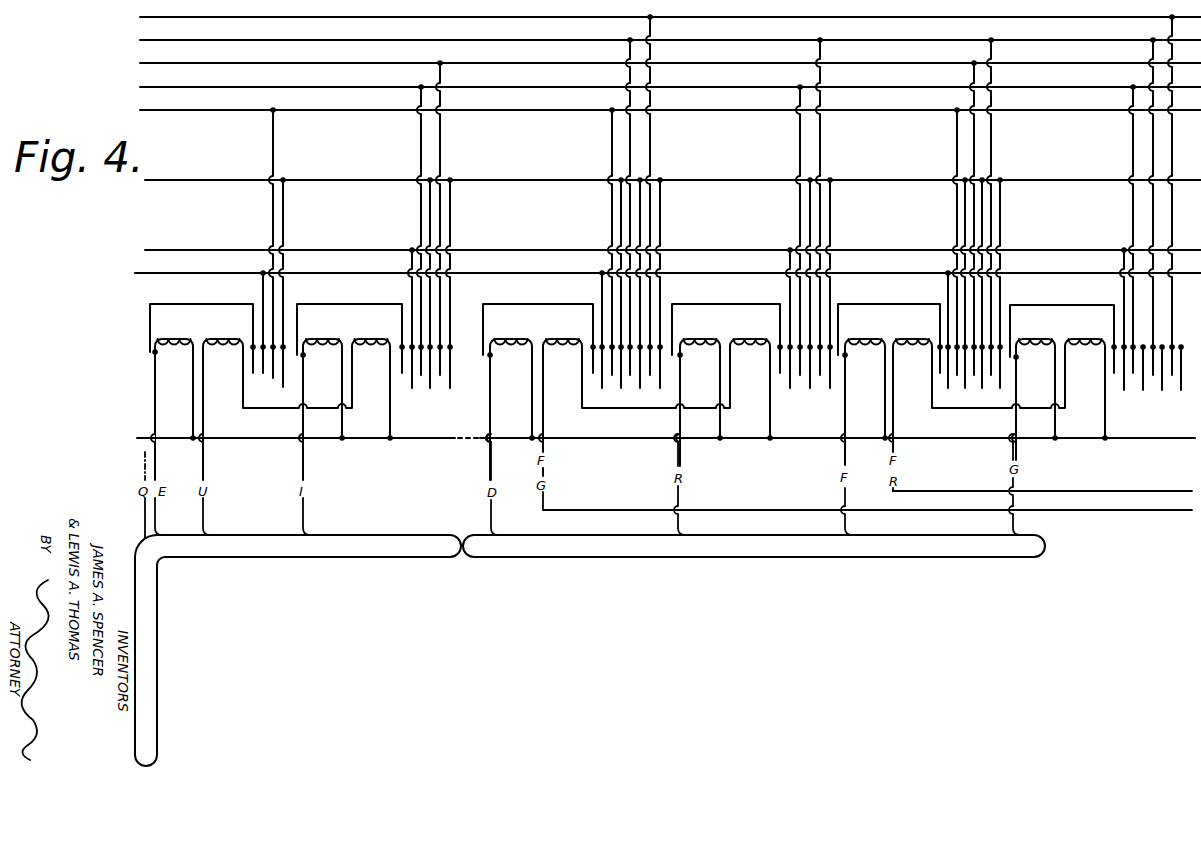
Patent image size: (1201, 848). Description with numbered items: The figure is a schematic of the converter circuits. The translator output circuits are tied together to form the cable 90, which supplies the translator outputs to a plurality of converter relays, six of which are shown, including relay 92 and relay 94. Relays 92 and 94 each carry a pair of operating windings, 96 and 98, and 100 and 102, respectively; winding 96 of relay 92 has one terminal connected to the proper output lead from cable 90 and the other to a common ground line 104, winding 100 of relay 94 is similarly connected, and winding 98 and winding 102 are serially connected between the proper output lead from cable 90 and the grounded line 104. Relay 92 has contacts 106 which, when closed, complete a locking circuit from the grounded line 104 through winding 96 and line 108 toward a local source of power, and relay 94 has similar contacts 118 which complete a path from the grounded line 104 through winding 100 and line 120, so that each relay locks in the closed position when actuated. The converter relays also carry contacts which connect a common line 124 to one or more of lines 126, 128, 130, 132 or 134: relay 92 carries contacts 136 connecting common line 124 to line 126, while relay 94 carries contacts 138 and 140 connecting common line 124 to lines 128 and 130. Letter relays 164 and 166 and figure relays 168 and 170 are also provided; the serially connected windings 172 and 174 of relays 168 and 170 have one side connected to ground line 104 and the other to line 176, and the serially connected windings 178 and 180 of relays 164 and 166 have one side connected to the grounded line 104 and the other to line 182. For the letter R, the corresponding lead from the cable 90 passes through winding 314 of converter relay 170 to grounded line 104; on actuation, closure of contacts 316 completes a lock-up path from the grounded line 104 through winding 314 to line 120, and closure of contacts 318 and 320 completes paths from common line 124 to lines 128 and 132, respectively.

The line 134 is at (140, 17).
The line 132 is at (140, 40).
The line 130 is at (140, 63).
The line 128 is at (140, 87).
The line 126 is at (140, 110).
The common line 124 is at (146, 178).
The line 120 is at (146, 239).
The line 108 is at (140, 273).
The converter relay 92 is at (208, 332).
The converter relay 94 is at (356, 332).
The operating winding 96 is at (172, 409).
The operating winding 98 is at (275, 409).
The operating winding 100 is at (320, 409).
The operating winding 102 is at (371, 388).
The contacts 106 is at (258, 376).
The contacts 136 is at (276, 384).
The contacts 118 is at (402, 374).
The contacts 138 is at (421, 378).
The contacts 140 is at (440, 374).
The figure relay 168 is at (550, 332).
The winding 172 is at (560, 350).
The figure relay 170 is at (738, 332).
The winding 314 is at (701, 352).
The winding 174 is at (750, 352).
The contacts 316 is at (792, 378).
The contacts 318 is at (801, 430).
The contacts 320 is at (820, 374).
The letter relay 164 is at (902, 332).
The winding 178 is at (912, 352).
The letter relay 166 is at (1075, 332).
The winding 180 is at (1085, 352).
The common ground line 104 is at (572, 443).
The line 176 is at (714, 513).
The line 182 is at (1064, 494).
The cable 90 is at (238, 571).